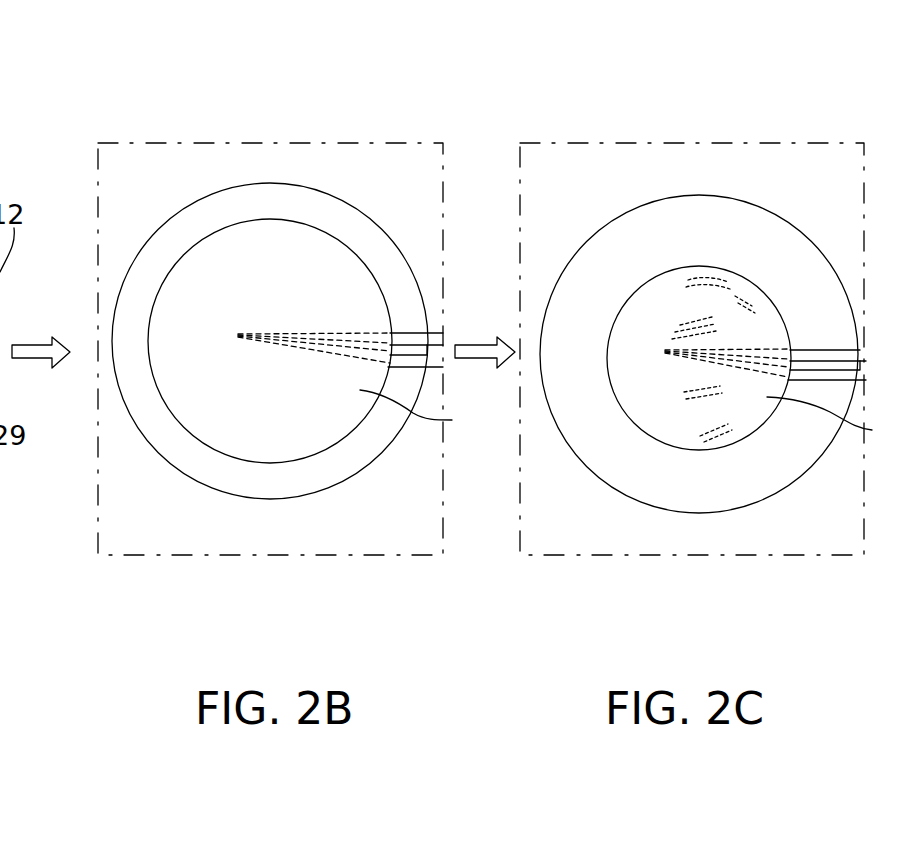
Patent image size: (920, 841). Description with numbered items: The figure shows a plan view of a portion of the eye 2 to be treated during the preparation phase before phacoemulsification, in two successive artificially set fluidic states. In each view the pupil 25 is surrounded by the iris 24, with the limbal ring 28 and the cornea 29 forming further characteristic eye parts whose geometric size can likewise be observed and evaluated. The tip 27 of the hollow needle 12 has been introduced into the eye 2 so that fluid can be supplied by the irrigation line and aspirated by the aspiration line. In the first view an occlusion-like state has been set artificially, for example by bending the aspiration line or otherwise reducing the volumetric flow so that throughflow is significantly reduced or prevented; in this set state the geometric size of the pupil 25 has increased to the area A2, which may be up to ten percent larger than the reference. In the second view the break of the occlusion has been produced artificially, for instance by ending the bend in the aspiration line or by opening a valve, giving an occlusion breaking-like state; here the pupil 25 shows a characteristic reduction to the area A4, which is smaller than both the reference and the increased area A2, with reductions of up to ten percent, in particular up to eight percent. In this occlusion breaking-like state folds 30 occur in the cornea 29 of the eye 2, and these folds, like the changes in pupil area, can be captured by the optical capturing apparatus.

In FIG. 2B, the eye to be treated 2 is at (373, 183).
In FIG. 2C, the eye to be treated 2 is at (808, 183).
In FIG. 2B, the hollow needle 12 is at (430, 330).
In FIG. 2C, the hollow needle 12 is at (848, 357).
In FIG. 2B, the iris 24 is at (223, 213).
In FIG. 2C, the iris 24 is at (658, 228).
In FIG. 2B, the pupil 25 is at (177, 277).
In FIG. 2C, the pupil 25 is at (653, 292).
In FIG. 2B, the tip of the hollow needle 27 is at (239, 332).
In FIG. 2C, the tip of the hollow needle 27 is at (665, 350).
In FIG. 2B, the limbal ring 28 is at (299, 182).
In FIG. 2C, the limbal ring 28 is at (731, 191).
In FIG. 2B, the cornea 29 is at (425, 415).
In FIG. 2C, the cornea 29 is at (839, 421).
In FIG. 2C, the folds 30 is at (672, 409).
In FIG. 2B, the area of the pupil in the occlusion-like state A2 is at (177, 347).
In FIG. 2C, the area of the pupil in the occlusion breaking-like state A4 is at (637, 348).